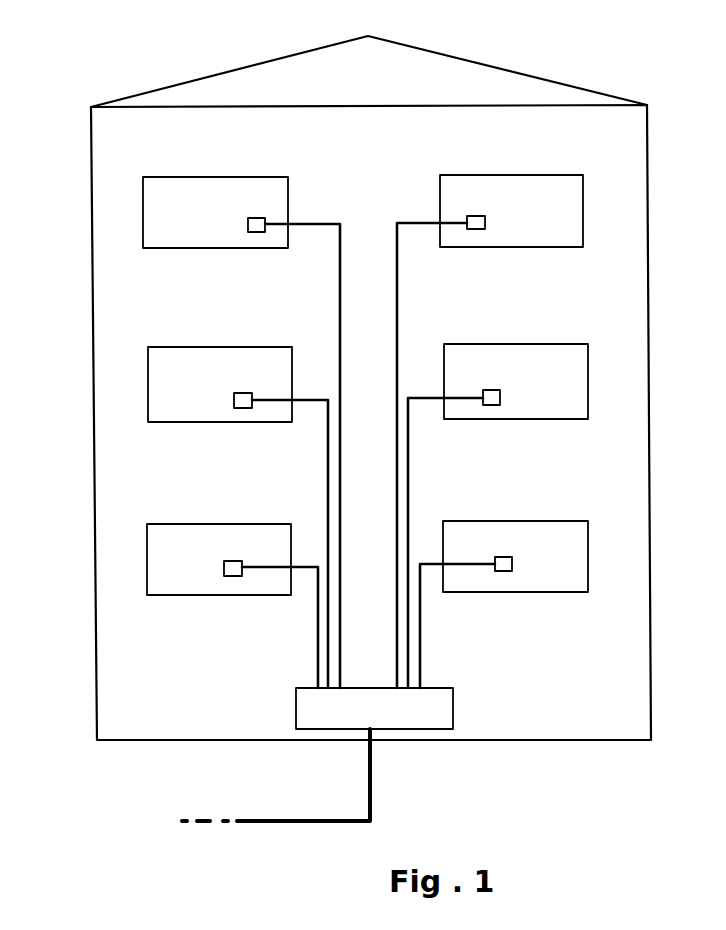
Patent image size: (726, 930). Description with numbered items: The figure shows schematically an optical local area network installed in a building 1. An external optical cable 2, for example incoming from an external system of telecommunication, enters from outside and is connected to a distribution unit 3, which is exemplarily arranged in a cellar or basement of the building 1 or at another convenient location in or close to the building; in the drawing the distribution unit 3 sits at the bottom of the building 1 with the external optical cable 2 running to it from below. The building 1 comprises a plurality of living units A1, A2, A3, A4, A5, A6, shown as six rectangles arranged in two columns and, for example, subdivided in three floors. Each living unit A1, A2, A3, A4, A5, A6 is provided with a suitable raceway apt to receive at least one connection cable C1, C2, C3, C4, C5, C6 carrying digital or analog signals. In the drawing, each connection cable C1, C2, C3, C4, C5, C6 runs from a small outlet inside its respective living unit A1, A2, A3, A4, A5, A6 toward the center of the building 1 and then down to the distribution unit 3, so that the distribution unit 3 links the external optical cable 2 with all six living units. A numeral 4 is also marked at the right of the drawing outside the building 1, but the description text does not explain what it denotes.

The building 1 is at (532, 83).
The external optical cable 2 is at (273, 820).
The distribution unit 3 is at (425, 713).
The exterior environment 4 is at (719, 633).
The living unit A1 is at (185, 215).
The living unit A2 is at (193, 375).
The living unit A3 is at (180, 560).
The living unit A4 is at (565, 210).
The living unit A5 is at (562, 378).
The living unit A6 is at (560, 560).
The connection cable C1 is at (338, 287).
The connection cable C2 is at (328, 478).
The connection cable C3 is at (317, 626).
The connection cable C4 is at (397, 283).
The connection cable C5 is at (408, 480).
The connection cable C6 is at (420, 620).